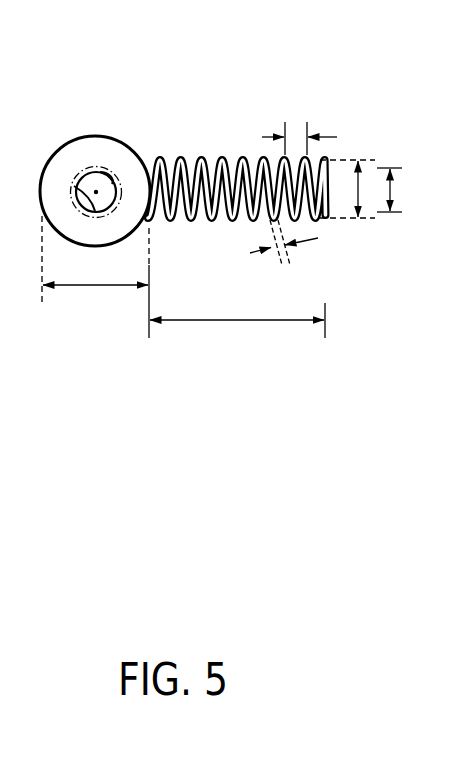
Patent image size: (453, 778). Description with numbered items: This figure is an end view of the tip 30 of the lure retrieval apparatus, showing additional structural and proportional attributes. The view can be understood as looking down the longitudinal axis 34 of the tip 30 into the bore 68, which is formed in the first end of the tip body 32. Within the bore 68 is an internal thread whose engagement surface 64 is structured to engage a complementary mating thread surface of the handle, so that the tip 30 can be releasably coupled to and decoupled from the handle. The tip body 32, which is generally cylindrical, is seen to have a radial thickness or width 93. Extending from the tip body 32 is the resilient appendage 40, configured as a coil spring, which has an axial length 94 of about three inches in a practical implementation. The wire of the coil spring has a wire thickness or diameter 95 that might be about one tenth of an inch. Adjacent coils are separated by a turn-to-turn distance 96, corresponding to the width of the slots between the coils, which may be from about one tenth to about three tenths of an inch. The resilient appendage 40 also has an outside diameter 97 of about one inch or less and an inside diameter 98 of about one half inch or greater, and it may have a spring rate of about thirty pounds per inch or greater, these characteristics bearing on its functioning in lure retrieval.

The tip 30 is at (170, 132).
The tip body 32 is at (113, 137).
The longitudinal axis 34 is at (76, 180).
The resilient appendage 40 is at (183, 158).
The engagement surface 64 is at (96, 192).
The bore 68 is at (100, 172).
The radial thickness or width 93 is at (95, 287).
The axial length 94 is at (238, 322).
The wire thickness or diameter 95 is at (286, 263).
The turn-to-turn distance 96 is at (291, 123).
The outside diameter 97 is at (357, 178).
The inside diameter 98 is at (392, 187).